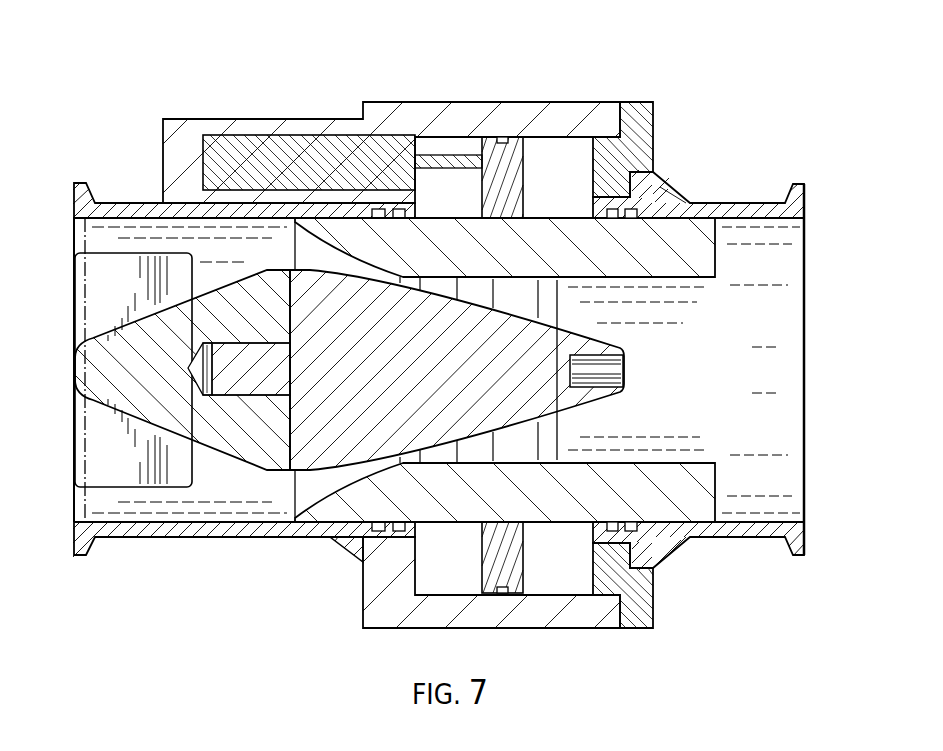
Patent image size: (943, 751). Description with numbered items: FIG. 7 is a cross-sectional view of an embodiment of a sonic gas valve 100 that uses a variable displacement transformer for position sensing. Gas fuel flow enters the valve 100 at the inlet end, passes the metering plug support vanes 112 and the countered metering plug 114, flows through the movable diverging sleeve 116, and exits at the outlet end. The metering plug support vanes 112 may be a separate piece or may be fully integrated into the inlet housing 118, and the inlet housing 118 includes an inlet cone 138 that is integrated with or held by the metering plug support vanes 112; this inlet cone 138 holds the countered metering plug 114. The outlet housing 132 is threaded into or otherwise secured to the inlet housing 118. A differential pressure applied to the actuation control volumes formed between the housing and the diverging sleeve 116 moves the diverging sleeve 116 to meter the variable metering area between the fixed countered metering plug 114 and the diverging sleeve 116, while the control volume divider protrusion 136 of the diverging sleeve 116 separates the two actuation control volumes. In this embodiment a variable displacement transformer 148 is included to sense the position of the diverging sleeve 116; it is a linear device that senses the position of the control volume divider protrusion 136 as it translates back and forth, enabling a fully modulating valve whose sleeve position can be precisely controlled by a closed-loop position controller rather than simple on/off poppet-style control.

The valve 100 is at (193, 85).
The metering plug support vanes 112 is at (107, 280).
The countered metering plug 114 is at (357, 415).
The diverging sleeve 116 is at (683, 255).
The inlet housing 118 is at (197, 528).
The outlet housing 132 is at (783, 270).
The control volume divider protrusion 136 is at (507, 167).
The inlet cone 138 is at (133, 380).
The variable displacement transformer (VDT) 148 is at (330, 158).